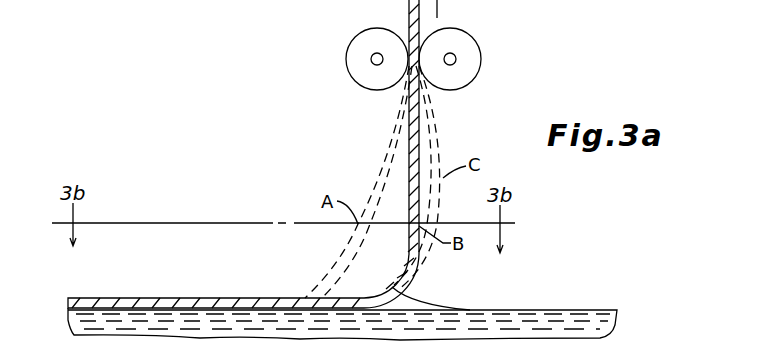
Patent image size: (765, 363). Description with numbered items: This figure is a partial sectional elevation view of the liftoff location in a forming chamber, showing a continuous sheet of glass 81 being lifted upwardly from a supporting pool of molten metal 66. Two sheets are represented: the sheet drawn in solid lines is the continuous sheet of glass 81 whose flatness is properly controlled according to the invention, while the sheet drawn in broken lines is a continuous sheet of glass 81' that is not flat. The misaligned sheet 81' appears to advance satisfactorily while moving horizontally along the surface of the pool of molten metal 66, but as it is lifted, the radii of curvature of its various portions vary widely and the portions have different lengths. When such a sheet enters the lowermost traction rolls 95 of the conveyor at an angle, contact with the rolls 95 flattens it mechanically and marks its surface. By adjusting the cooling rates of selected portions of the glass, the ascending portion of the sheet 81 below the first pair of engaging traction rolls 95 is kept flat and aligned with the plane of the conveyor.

The traction rolls 95 is at (472, 37).
The continuous sheet of glass 81 is at (269, 155).
The continuous sheet of glass that is not flat 81' is at (409, 182).
The pool of molten metal 66 is at (545, 310).